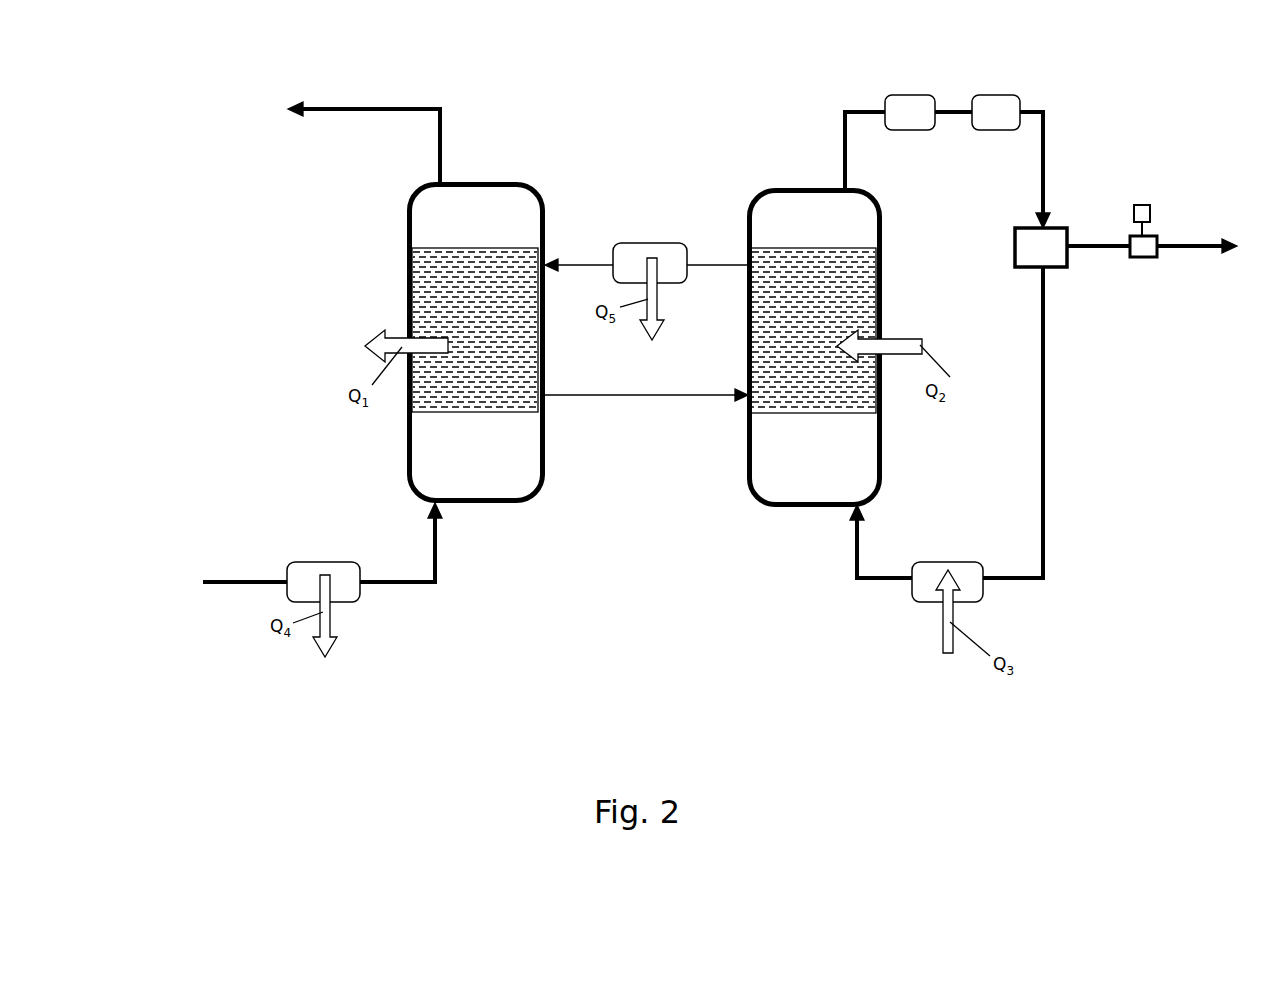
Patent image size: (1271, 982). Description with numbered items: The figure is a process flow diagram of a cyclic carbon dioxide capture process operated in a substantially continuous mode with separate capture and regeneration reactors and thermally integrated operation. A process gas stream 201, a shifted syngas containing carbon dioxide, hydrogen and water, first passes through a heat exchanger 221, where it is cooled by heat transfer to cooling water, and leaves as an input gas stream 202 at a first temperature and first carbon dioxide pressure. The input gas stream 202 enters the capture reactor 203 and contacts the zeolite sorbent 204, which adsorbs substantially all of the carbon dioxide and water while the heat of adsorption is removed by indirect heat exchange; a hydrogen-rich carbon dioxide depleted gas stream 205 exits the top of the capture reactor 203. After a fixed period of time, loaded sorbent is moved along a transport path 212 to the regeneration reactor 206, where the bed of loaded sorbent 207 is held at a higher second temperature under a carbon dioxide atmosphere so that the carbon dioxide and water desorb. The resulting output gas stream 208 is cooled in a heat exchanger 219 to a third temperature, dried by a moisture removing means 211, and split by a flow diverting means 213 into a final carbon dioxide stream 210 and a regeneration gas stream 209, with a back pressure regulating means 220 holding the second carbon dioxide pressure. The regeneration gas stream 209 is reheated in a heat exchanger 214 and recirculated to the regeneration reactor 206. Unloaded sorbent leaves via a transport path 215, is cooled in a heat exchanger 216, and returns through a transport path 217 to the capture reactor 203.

The process gas stream 201 is at (250, 584).
The input gas stream 202 is at (405, 585).
The capture reactor 203 is at (406, 226).
The zeolite sorbent 204 is at (440, 302).
The CO2 depleted gas stream 205 is at (366, 106).
The regeneration reactor 206 is at (752, 191).
The second packed/reaction zone 207 is at (782, 318).
The output gas stream 208 is at (870, 112).
The regeneration gas stream 209 is at (880, 583).
The final CO2 stream 210 is at (1195, 252).
The moisture removing means 211 is at (999, 94).
The transport path 212 is at (625, 398).
The flow diverting means 213 is at (1066, 227).
The heat exchanger 214 is at (986, 598).
The transport path 215 is at (723, 262).
The heat exchanger 216 is at (680, 284).
The transport path 217 is at (585, 262).
The heat exchanger 219 is at (912, 94).
The back pressure regulating means 220 is at (1146, 204).
The heat exchanger 221 is at (304, 565).